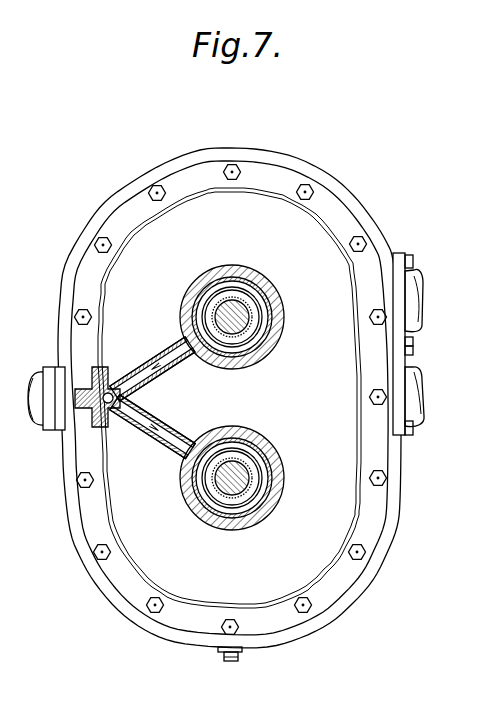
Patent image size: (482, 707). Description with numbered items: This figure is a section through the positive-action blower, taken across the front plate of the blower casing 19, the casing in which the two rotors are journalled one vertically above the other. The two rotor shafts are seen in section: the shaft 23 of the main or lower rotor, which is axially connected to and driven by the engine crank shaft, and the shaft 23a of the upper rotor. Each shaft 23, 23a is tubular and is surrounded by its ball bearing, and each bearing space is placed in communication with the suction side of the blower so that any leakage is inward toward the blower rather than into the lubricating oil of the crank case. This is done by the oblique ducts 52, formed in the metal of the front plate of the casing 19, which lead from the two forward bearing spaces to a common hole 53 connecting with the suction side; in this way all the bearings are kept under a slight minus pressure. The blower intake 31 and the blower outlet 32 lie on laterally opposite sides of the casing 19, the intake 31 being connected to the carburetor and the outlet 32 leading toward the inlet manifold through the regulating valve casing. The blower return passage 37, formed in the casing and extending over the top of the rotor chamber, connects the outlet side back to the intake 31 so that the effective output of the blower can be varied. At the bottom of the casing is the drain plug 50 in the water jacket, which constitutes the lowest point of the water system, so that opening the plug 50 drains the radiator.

The blower casing 19 is at (340, 215).
The rotor shaft 23a is at (250, 322).
The shaft of the main or lower rotor 23 is at (243, 488).
The oblique ducts 52 is at (172, 437).
The hole 53 is at (111, 392).
The blower intake 31 is at (64, 413).
The blower return passage 37 is at (417, 295).
The outlet 32 is at (418, 405).
The drain plug 50 is at (236, 660).